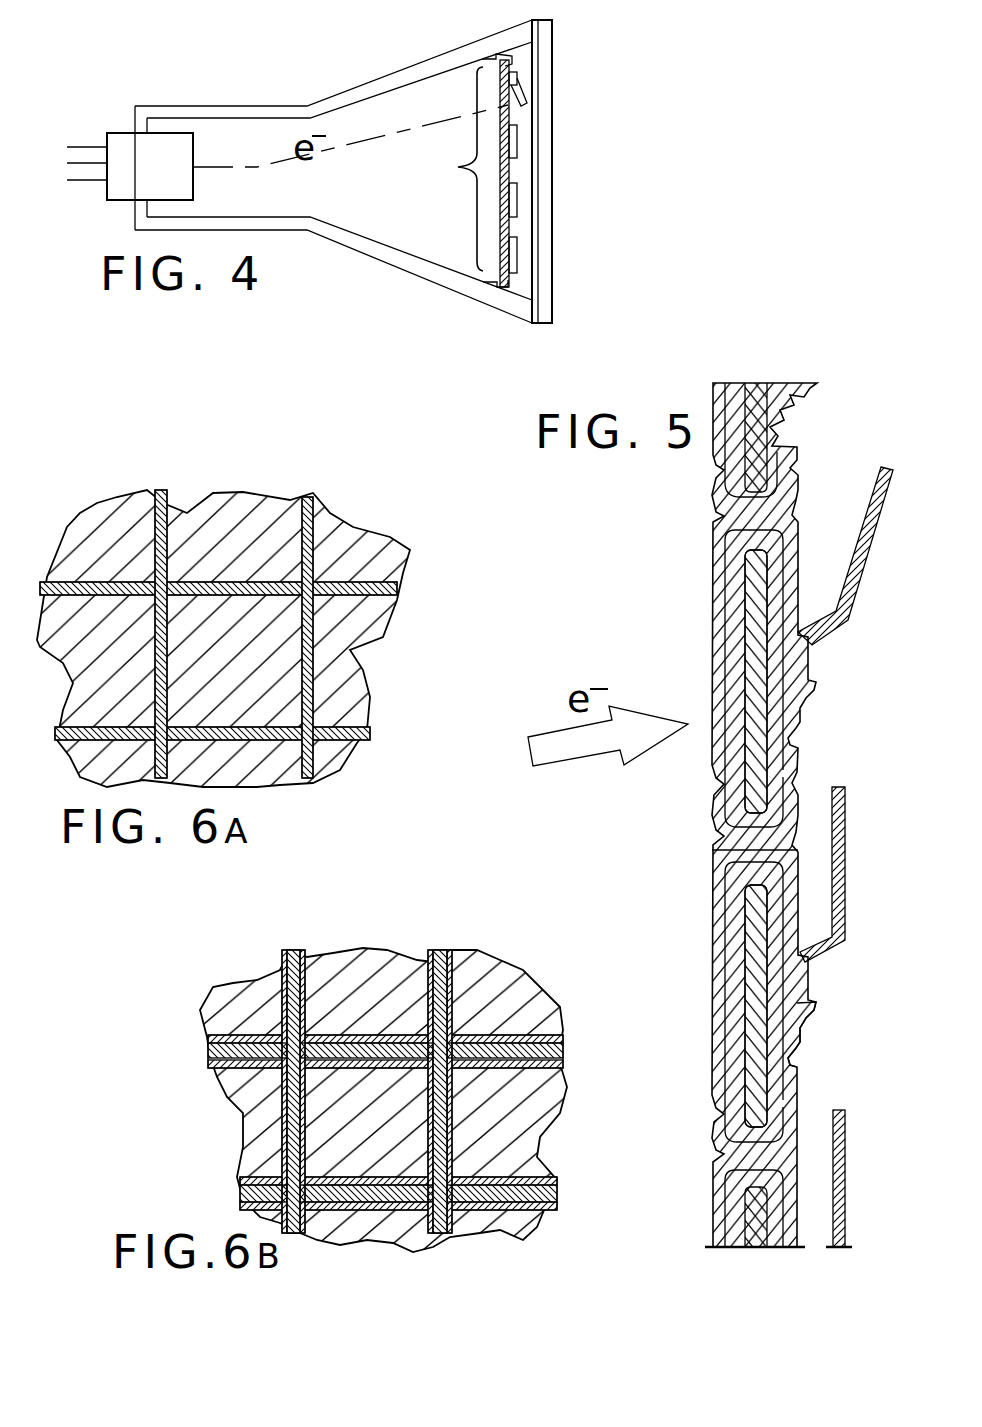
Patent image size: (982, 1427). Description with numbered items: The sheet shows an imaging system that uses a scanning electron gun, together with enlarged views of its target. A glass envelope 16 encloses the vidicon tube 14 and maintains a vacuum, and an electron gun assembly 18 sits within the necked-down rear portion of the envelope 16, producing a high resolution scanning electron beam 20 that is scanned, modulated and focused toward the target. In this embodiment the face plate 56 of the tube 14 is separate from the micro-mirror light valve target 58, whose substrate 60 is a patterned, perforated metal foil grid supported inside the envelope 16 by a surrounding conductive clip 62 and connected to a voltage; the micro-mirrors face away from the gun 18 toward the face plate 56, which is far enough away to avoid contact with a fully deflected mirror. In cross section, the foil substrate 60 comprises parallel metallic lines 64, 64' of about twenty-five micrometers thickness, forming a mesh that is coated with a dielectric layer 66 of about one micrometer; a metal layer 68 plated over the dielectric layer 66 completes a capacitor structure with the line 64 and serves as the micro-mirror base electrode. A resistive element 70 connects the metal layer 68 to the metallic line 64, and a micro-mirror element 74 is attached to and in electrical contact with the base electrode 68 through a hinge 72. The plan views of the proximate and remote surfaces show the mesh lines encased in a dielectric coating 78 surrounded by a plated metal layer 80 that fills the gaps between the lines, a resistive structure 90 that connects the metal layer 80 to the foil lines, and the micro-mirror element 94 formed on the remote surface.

In FIG. 4, the vidicon tube 14 is at (386, 73).
In FIG. 4, the glass envelope 16 is at (232, 105).
In FIG. 4, the electron gun assembly 18 is at (132, 155).
In FIG. 4, the scanning electron beam 20 is at (374, 150).
In FIG. 4, the face plate 56 is at (538, 247).
In FIG. 4, the micro-mirror light valve target 58 is at (446, 197).
In FIG. 4, the substrate 60 is at (505, 228).
In FIG. 5, the substrate 60 is at (752, 371).
In FIG. 4, the clip 62 is at (503, 290).
In FIG. 5, the metallic line 64 is at (689, 1066).
In FIG. 5, the metallic line 64' is at (686, 598).
In FIG. 5, the dielectric layer 66 is at (790, 1047).
In FIG. 5, the metal layer 68 is at (790, 890).
In FIG. 5, the resistive element 70 is at (790, 1047).
In FIG. 5, the hinge 72 is at (822, 957).
In FIG. 5, the micro-mirror element 74 is at (846, 817).
In FIG. 6A, the dielectric coating 78 is at (385, 590).
In FIG. 6B, the dielectric coating 78 is at (440, 970).
In FIG. 6A, the metal layer 80 is at (110, 538).
In FIG. 6B, the metal layer 80 is at (448, 960).
In FIG. 6B, the resistive structure 90 is at (228, 1050).
In FIG. 6B, the micro-mirror element 94 is at (243, 1002).